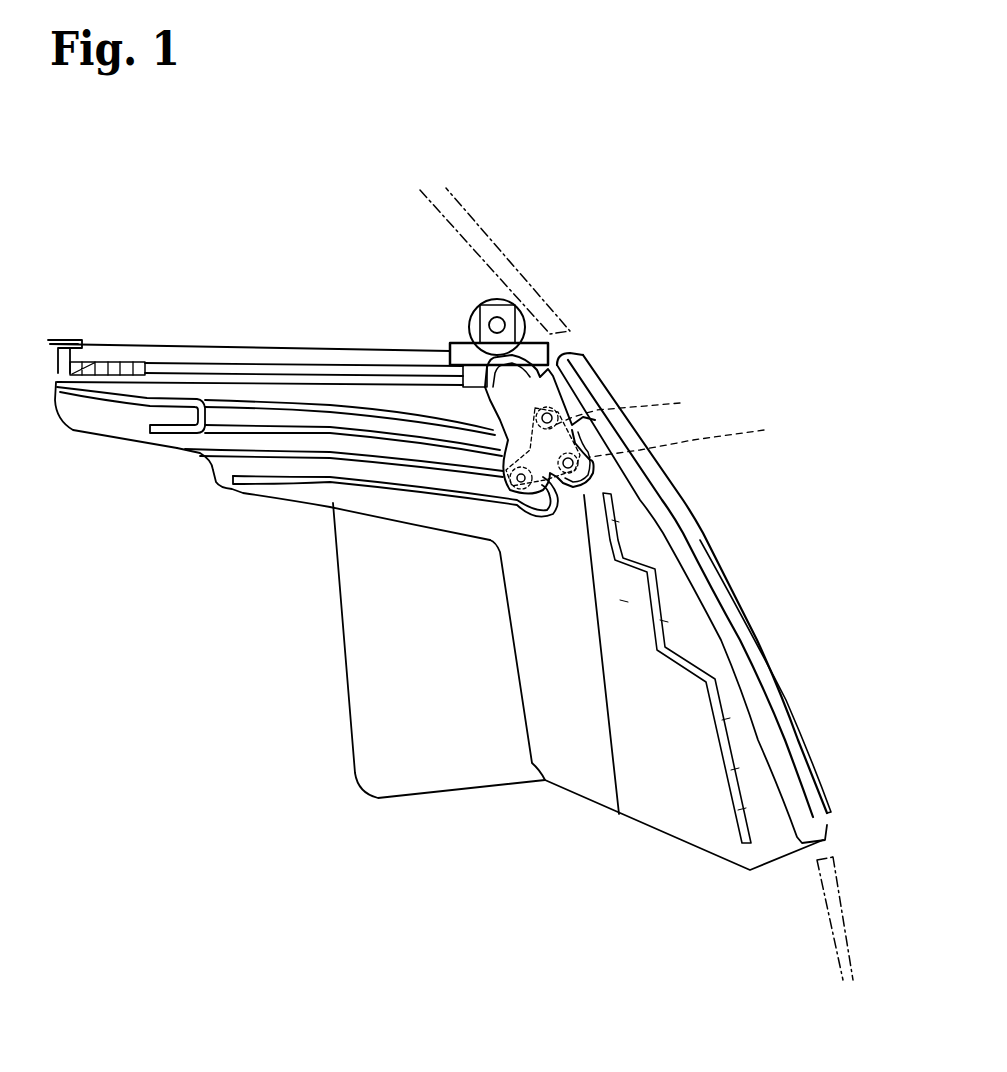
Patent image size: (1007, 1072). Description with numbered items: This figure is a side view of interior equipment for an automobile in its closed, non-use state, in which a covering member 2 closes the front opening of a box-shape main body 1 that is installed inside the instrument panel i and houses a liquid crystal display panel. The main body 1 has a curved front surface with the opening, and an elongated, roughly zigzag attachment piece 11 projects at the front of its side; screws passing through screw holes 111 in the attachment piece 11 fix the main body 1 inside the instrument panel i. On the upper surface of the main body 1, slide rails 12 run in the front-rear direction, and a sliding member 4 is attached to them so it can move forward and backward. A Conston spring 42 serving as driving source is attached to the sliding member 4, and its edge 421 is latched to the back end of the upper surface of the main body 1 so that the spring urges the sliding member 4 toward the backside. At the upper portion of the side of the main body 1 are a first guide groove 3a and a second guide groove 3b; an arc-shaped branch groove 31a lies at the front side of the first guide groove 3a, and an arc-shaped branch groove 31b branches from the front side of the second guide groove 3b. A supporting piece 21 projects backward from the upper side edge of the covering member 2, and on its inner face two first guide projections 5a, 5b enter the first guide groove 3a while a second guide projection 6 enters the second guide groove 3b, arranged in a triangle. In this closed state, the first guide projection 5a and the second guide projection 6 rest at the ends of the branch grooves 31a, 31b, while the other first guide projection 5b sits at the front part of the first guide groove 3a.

The box-shape main body 1 is at (572, 730).
The attachment piece 11 is at (720, 734).
The screw hole 111 is at (745, 818).
The slide rail 12 is at (165, 362).
The covering member 2 is at (682, 514).
The supporting piece 21 is at (522, 380).
The first guide groove 3a is at (283, 412).
The second guide groove 3b is at (283, 463).
The branch groove 31a is at (560, 397).
The branch groove 31b is at (555, 500).
The sliding member 4 is at (472, 355).
The Conston spring 42 is at (517, 323).
The edge of the Conston spring 421 is at (63, 340).
The first guide projection 5a is at (629, 407).
The first guide projection 5b is at (693, 434).
The second guide projection 6 is at (525, 478).
The instrument panel i is at (507, 258).